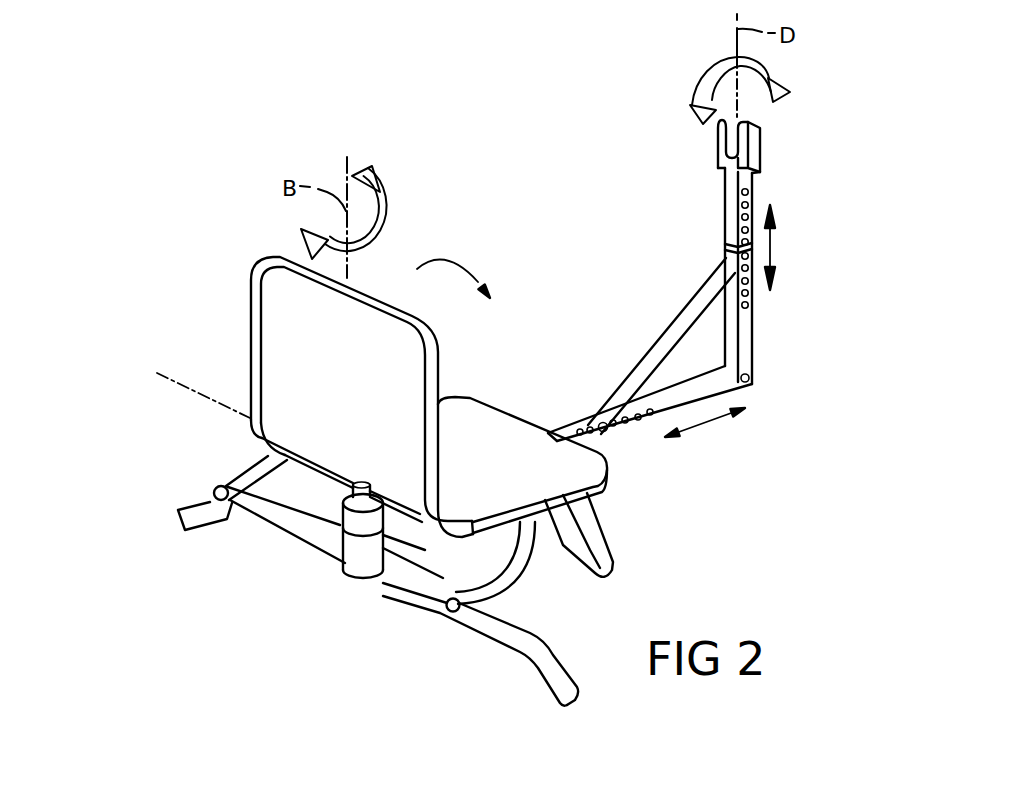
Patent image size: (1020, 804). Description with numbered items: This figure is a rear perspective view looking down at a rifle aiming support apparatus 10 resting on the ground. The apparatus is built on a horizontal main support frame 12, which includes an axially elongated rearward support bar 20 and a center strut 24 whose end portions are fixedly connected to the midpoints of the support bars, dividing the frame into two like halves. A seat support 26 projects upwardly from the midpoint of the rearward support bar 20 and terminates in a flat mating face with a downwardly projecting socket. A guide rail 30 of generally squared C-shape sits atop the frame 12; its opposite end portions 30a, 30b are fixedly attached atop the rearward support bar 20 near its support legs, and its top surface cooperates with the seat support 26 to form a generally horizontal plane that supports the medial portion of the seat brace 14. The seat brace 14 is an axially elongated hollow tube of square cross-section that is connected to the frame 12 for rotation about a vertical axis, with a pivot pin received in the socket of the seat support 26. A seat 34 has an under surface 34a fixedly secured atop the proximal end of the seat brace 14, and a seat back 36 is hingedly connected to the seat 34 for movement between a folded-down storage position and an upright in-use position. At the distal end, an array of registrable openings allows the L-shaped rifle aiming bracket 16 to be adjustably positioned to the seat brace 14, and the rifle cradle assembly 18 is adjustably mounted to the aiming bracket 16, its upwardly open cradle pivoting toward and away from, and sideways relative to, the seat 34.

The support apparatus 10 is at (547, 152).
The horizontal main support frame 12 is at (218, 587).
The seat brace 14 is at (557, 405).
The L-shaped rifle aiming bracket 16 is at (705, 258).
The rifle cradle assembly 18 is at (700, 152).
The rearward support bar 20 is at (414, 625).
The center strut 24 is at (407, 535).
The seat support 26 is at (343, 499).
The guide rail 30 is at (545, 575).
The guide rail end portion 30a is at (498, 587).
The guide rail end portion 30b is at (248, 473).
The seat 34 is at (622, 503).
The under surface 34a is at (577, 492).
The seat back 36 is at (232, 336).